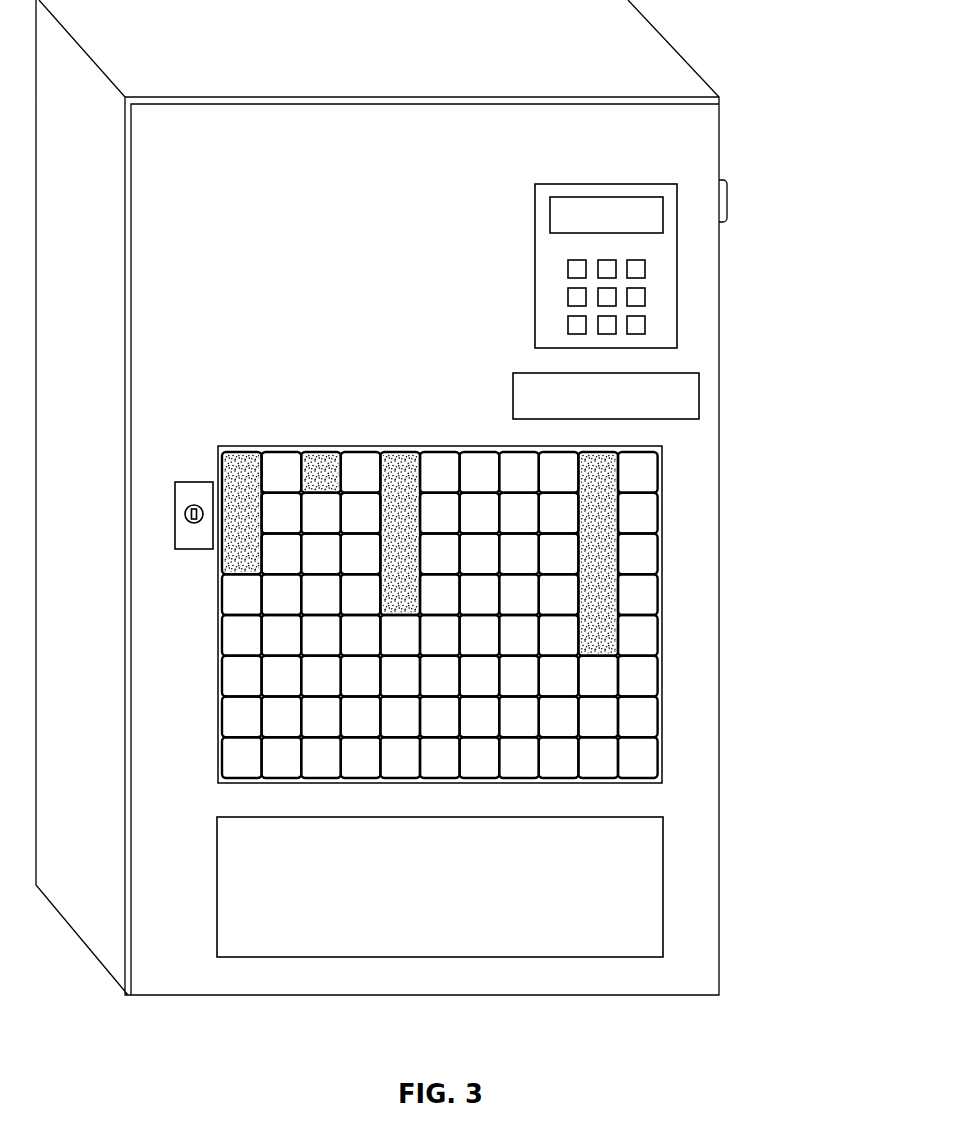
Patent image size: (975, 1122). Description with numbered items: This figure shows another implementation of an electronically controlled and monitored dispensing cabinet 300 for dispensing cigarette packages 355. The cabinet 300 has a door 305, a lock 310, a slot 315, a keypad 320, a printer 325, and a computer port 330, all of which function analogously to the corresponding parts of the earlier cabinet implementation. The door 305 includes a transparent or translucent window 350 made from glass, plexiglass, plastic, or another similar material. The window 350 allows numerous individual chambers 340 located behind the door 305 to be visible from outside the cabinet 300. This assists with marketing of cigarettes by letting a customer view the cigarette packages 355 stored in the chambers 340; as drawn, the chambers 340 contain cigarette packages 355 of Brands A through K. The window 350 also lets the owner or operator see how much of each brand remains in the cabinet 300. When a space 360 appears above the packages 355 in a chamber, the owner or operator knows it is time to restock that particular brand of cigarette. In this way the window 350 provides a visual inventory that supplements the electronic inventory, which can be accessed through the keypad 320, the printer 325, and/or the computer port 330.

The dispensing cabinet 300 is at (655, 52).
The door 305 is at (142, 223).
The lock 310 is at (184, 513).
The slot 315 is at (643, 897).
The keypad 320 is at (659, 287).
The printer 325 is at (680, 400).
The computer port 330 is at (728, 202).
The chambers 340 is at (236, 552).
The window 350 is at (426, 614).
The cigarette packages 355 is at (648, 636).
The space 360 is at (602, 545).